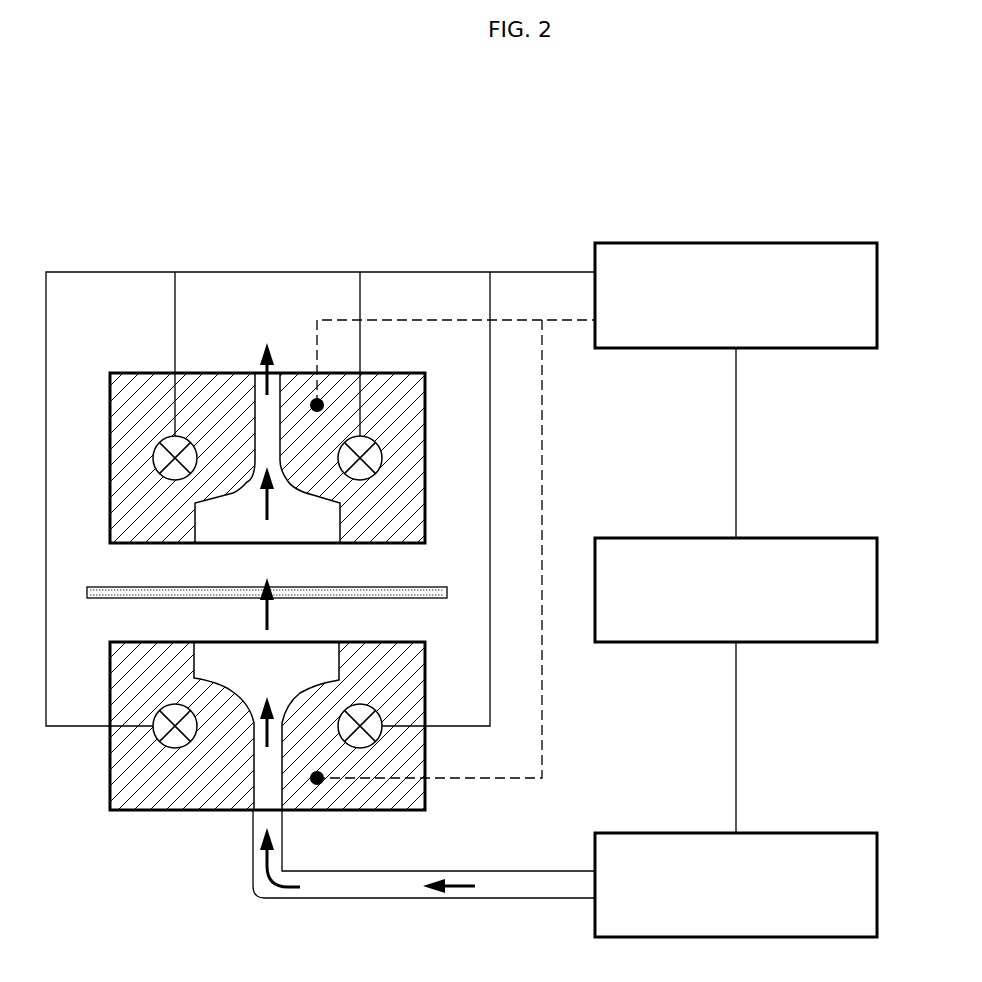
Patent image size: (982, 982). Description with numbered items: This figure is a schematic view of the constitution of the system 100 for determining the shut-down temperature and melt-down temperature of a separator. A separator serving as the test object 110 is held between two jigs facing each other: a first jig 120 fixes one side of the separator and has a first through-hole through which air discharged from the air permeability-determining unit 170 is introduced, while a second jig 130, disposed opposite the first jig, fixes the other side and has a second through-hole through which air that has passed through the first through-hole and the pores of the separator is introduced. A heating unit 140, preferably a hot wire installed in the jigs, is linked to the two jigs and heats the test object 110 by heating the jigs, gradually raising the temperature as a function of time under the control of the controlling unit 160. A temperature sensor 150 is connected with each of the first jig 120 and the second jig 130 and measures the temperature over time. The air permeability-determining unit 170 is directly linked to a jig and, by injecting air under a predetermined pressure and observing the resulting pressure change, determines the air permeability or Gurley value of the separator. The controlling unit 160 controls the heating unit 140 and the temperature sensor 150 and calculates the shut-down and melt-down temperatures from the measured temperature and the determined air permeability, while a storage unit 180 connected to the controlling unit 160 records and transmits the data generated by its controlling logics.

The system for determining the shut-down temperature and melt-down temperature of a 100 is at (107, 155).
The test object 110 is at (153, 587).
The first jig 120 is at (153, 642).
The second jig 130 is at (153, 373).
The heating unit 140 is at (153, 458).
The temperature sensor 150 is at (324, 405).
The controlling unit 160 is at (808, 243).
The air permeability-determining unit 170 is at (808, 833).
The storage unit 180 is at (808, 538).